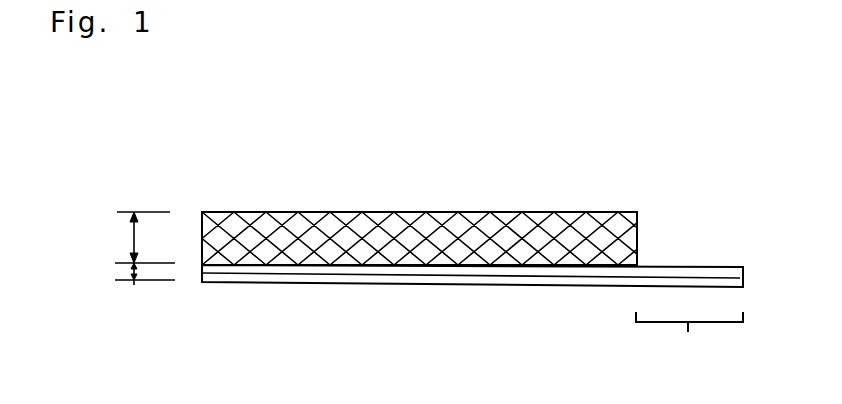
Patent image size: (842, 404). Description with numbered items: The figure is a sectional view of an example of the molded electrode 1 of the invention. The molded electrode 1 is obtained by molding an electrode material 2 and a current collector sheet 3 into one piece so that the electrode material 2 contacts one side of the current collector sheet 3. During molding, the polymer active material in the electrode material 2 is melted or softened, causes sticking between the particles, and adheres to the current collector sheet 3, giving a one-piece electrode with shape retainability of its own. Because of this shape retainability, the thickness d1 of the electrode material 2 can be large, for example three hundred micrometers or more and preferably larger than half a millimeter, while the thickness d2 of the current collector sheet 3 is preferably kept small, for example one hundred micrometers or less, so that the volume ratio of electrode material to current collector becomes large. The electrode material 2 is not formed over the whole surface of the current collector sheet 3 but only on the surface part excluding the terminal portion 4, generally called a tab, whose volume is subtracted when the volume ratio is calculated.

The molded electrode 1 is at (660, 177).
The electrode material 2 is at (398, 238).
The current collector sheet 3 is at (437, 273).
The terminal portion 4 is at (680, 342).
The thickness of the electrode material d1 is at (125, 237).
The thickness of the current collector d2 is at (125, 279).